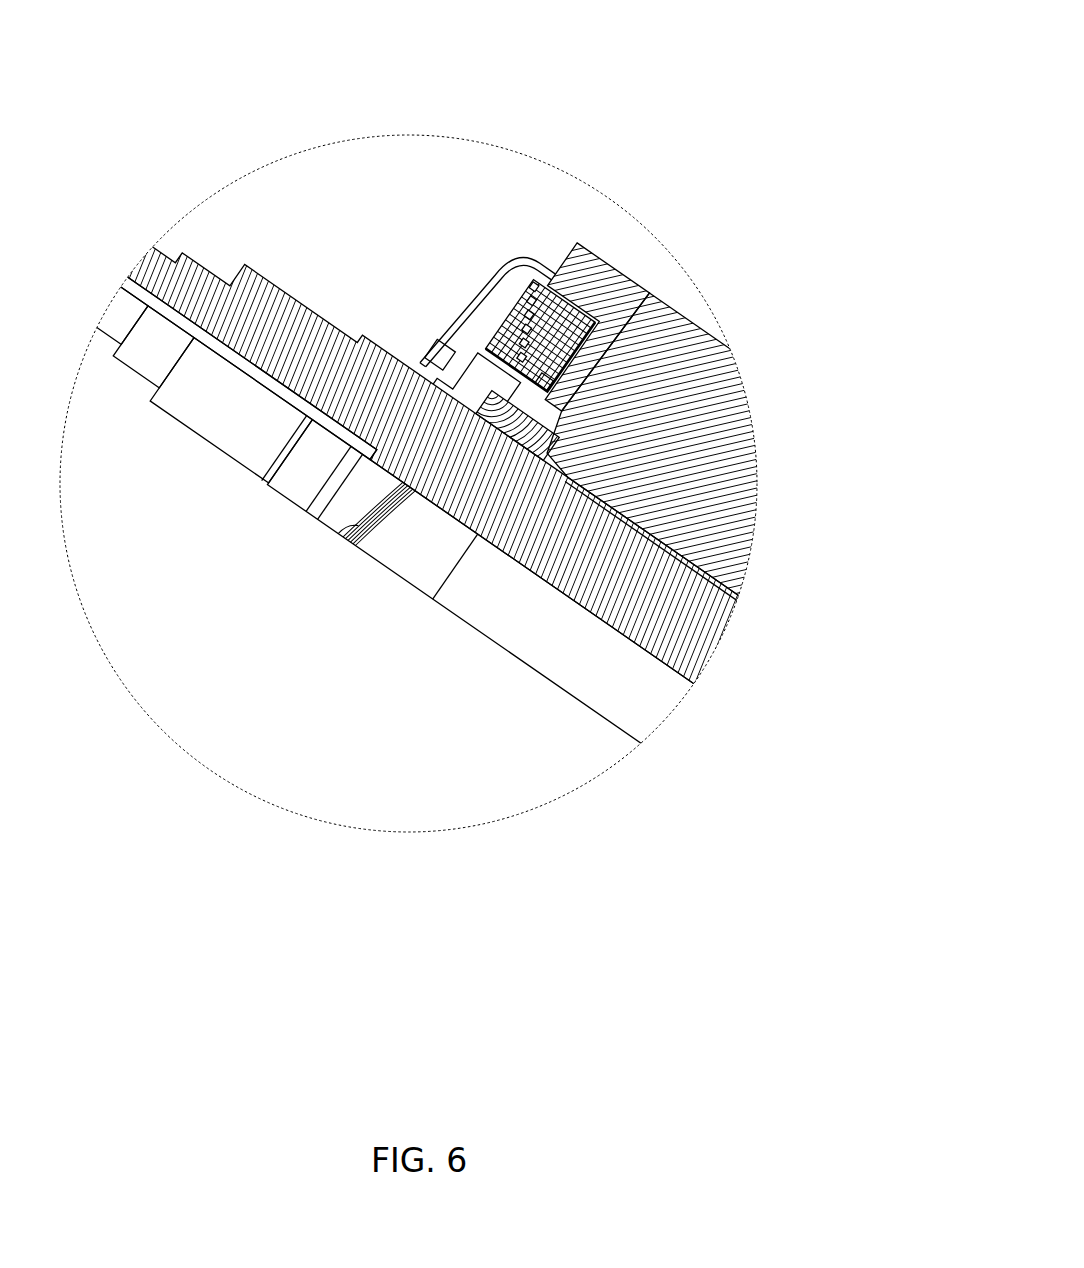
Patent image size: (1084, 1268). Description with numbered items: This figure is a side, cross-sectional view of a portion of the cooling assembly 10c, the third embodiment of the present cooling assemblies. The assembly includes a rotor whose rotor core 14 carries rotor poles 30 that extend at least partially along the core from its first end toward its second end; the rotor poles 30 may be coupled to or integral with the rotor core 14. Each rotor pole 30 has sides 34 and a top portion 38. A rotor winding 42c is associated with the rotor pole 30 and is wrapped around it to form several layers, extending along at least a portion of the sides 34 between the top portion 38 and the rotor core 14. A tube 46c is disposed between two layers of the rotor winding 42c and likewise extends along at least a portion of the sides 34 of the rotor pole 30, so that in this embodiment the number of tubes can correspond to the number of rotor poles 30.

The cooling assembly 10c is at (662, 50).
The rotor core 14 is at (650, 513).
The rotor pole 30 is at (677, 316).
The top portion 38 is at (563, 262).
The rotor winding 42c is at (513, 297).
The tube 46c is at (553, 313).
The sides 34 is at (545, 388).